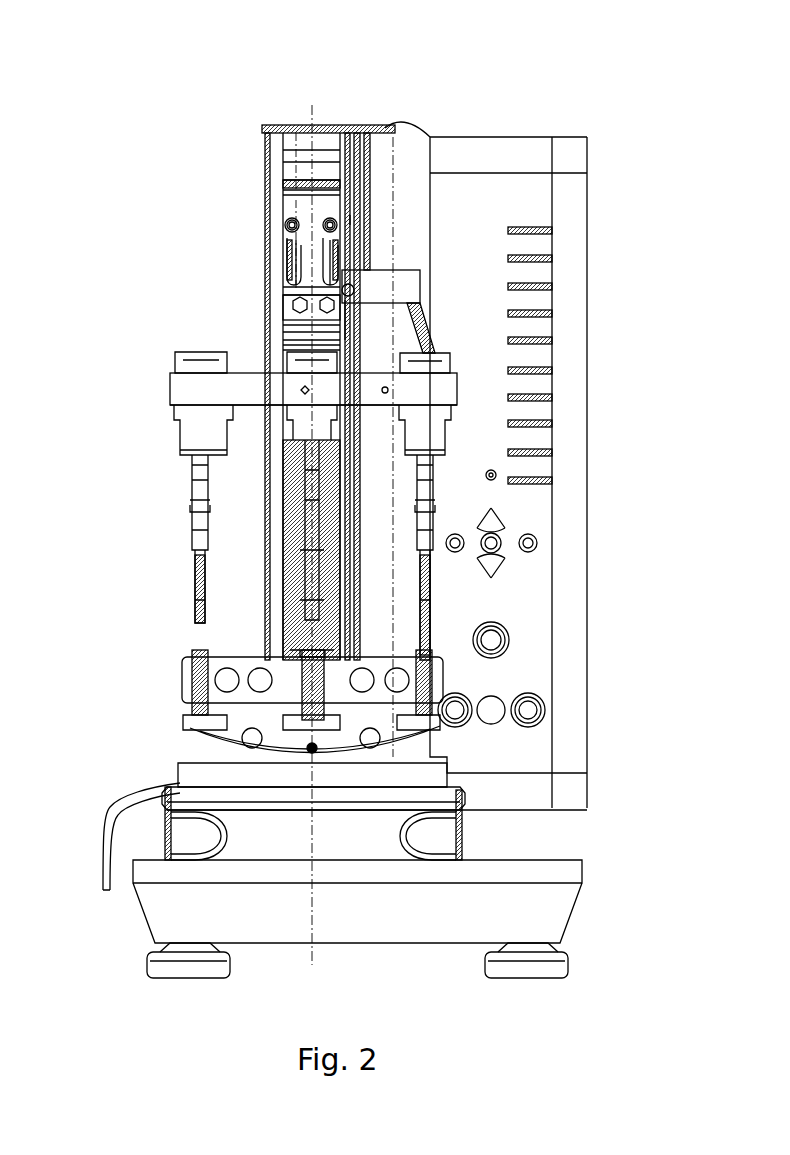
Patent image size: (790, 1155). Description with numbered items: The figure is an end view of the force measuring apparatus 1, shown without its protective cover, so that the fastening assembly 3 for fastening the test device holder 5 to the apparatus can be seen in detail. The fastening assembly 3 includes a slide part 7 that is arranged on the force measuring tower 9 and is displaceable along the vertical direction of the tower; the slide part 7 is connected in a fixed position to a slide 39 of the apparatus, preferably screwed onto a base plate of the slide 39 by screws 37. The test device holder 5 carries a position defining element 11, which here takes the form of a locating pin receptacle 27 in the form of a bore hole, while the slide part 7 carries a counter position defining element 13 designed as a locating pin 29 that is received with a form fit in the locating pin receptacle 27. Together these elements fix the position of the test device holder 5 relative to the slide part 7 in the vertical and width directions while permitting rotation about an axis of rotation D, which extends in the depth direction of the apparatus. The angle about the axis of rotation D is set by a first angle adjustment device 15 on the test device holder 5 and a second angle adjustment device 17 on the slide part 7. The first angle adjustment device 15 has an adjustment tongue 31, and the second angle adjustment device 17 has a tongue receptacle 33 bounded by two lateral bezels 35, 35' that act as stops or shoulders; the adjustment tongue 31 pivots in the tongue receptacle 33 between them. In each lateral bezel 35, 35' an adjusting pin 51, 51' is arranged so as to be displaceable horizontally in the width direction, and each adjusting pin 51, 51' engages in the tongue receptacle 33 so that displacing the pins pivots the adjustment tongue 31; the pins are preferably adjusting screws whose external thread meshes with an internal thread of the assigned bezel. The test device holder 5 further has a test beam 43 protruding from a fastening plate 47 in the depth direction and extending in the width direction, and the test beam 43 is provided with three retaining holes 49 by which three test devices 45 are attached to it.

The force measuring apparatus 1 is at (150, 125).
The fastening assembly 3 is at (190, 192).
The test device holder 5 is at (250, 318).
The slide part 7 is at (277, 212).
The force measuring tower 9 is at (395, 143).
The position defining element 11 is at (283, 325).
The counter position defining element 13 is at (320, 318).
The first angle adjustment device 15 is at (339, 145).
The second angle adjustment device 17 is at (280, 210).
The locating pin receptacle 27 is at (254, 314).
The locating pin 29 is at (237, 334).
The adjustment tongue 31 is at (303, 238).
The tongue receptacle 33 is at (267, 172).
The lateral bezel 35 is at (254, 261).
The lateral bezel 35' is at (492, 269).
The screws 37 is at (304, 233).
The slide 39 is at (287, 177).
The test beam 43 is at (158, 399).
The test device 45 is at (318, 496).
The fastening plate 47 is at (278, 308).
The retaining hole 49 is at (173, 366).
The adjusting pin 51 is at (272, 262).
The adjusting pin 51' is at (491, 296).
The axis of rotation D is at (340, 348).